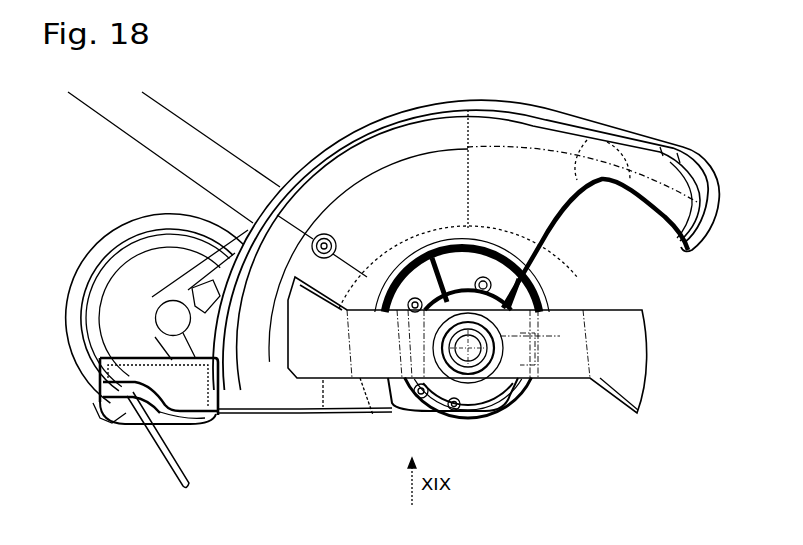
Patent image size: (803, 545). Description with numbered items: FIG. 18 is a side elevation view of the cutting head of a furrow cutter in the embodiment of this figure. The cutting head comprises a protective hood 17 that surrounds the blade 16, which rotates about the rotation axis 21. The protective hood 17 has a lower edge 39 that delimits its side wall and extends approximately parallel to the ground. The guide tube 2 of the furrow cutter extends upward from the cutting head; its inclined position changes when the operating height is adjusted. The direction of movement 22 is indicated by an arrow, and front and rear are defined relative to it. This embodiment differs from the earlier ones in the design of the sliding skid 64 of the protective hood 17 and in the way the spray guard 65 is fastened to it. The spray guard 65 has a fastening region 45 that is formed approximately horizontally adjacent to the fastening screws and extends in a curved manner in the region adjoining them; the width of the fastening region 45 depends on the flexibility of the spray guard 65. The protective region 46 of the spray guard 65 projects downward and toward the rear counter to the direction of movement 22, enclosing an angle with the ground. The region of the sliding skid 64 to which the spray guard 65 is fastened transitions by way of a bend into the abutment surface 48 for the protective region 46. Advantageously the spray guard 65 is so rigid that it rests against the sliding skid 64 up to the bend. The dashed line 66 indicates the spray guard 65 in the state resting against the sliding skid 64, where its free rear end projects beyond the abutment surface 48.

The guide tube 2 is at (218, 157).
The blade 16 is at (632, 355).
The protective hood 17 is at (483, 102).
The rotation axis 21 is at (468, 348).
The direction of movement 22 is at (395, 52).
The lower edge 39 is at (313, 418).
The fastening region 45 is at (120, 414).
The protective region 46 is at (188, 400).
The abutment surface 48 is at (160, 420).
The sliding skid 64 is at (178, 390).
The spray guard 65 is at (167, 457).
The dashed line 66 is at (215, 425).